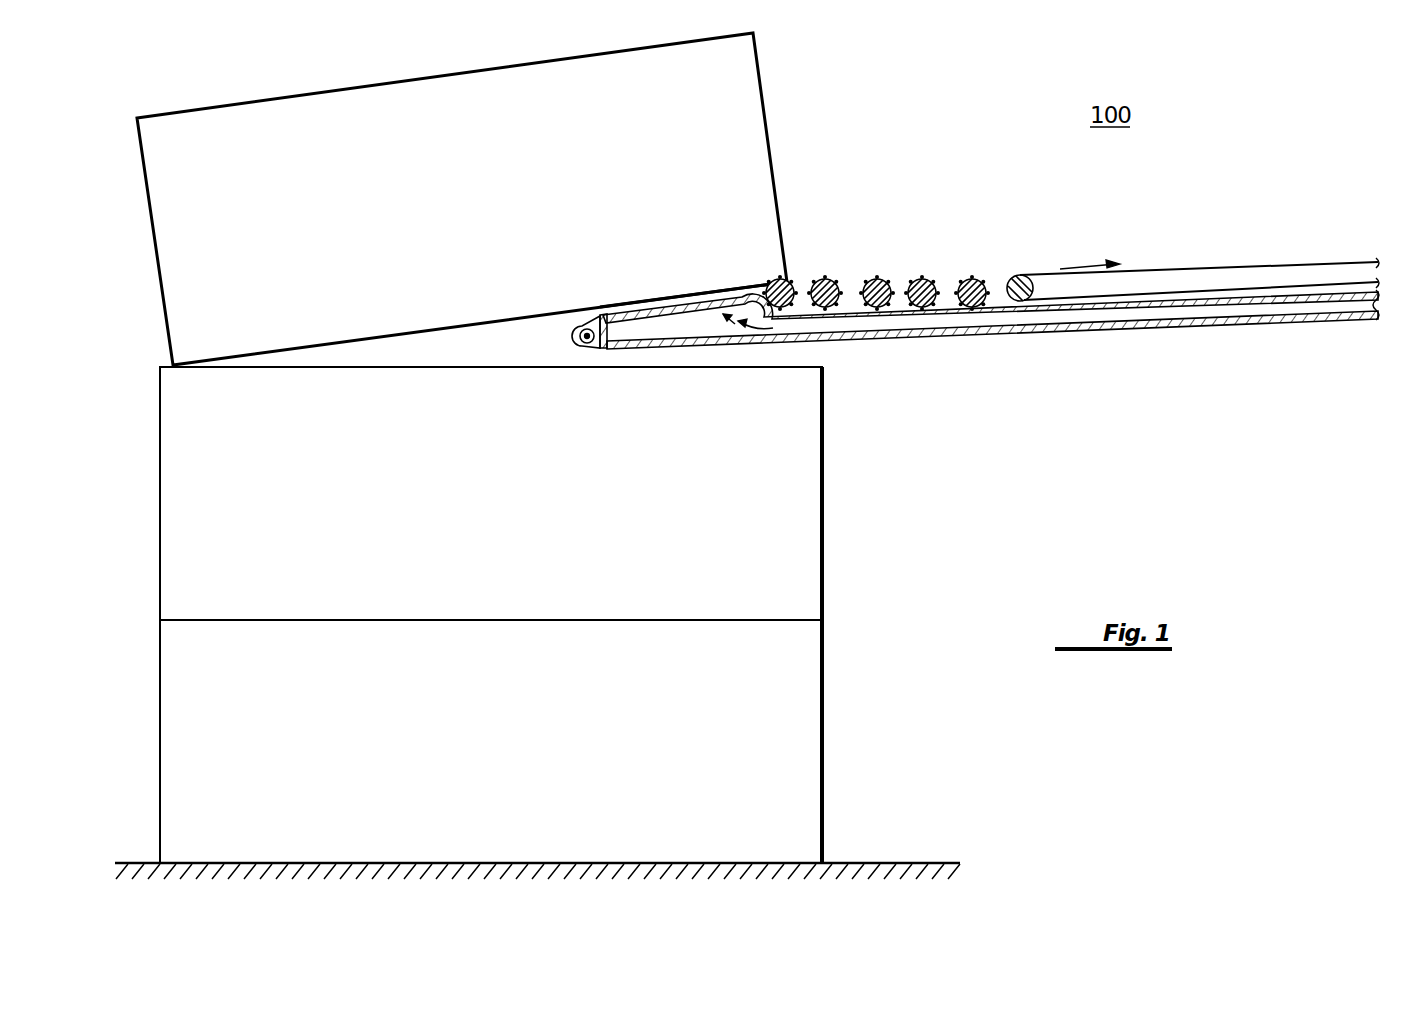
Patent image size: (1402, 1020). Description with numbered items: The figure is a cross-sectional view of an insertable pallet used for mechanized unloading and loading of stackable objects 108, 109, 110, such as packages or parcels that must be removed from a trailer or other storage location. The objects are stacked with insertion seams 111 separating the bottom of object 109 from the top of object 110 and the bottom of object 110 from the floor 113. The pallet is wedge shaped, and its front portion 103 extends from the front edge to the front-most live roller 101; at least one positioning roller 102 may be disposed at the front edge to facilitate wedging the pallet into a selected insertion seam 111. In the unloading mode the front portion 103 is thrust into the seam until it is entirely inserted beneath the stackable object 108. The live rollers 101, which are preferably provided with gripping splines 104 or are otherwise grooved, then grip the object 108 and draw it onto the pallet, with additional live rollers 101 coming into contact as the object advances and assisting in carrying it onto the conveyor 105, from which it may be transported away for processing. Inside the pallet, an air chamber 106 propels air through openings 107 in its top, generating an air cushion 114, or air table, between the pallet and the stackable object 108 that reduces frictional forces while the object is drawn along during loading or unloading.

The live rollers 101 is at (790, 280).
The positioning roller 102 is at (578, 337).
The front portion 103 is at (700, 348).
The gripping splines 104 is at (880, 278).
The conveyor 105 is at (1283, 264).
The air chamber 106 is at (728, 322).
The air openings 107 is at (652, 311).
The stackable object 108 is at (768, 140).
The stackable object 109 is at (823, 545).
The stackable object 110 is at (823, 728).
The insertion seam 111 is at (823, 620).
The floor 113 is at (940, 862).
The air cushion 114 is at (688, 296).